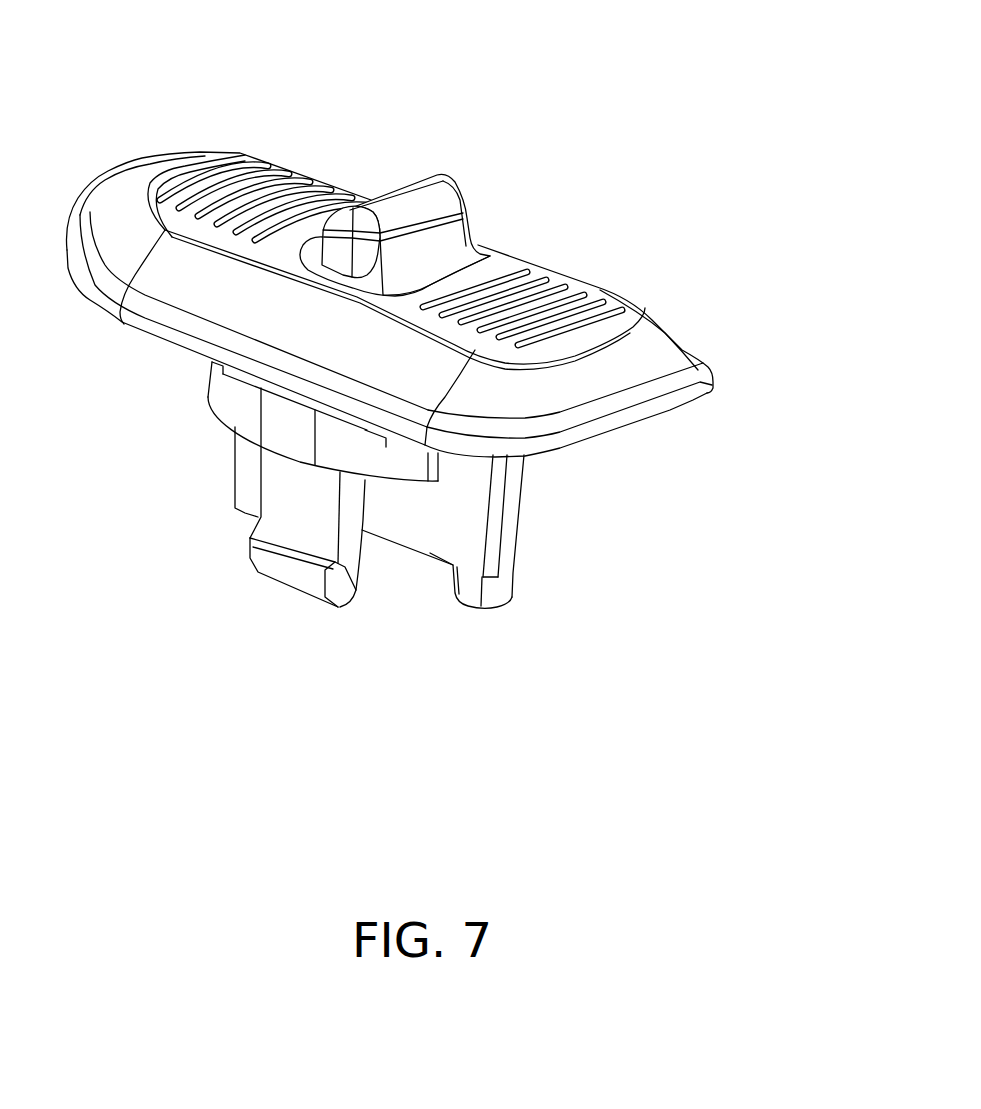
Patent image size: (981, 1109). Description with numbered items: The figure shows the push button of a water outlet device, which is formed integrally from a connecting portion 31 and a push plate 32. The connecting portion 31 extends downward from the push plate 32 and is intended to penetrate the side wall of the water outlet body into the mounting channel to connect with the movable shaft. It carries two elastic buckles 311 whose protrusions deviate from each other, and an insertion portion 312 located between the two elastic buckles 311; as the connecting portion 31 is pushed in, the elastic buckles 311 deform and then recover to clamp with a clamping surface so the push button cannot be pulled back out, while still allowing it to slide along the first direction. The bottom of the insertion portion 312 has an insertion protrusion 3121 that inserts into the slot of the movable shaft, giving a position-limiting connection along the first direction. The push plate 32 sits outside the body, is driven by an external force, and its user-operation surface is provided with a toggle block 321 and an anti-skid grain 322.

The connecting portion 31 is at (439, 604).
The elastic buckle 311 is at (323, 537).
The insertion portion 312 is at (516, 580).
The insertion protrusion 3121 is at (468, 585).
The push plate 32 is at (618, 362).
The toggle block 321 is at (417, 197).
The anti-skid grain 322 is at (285, 167).